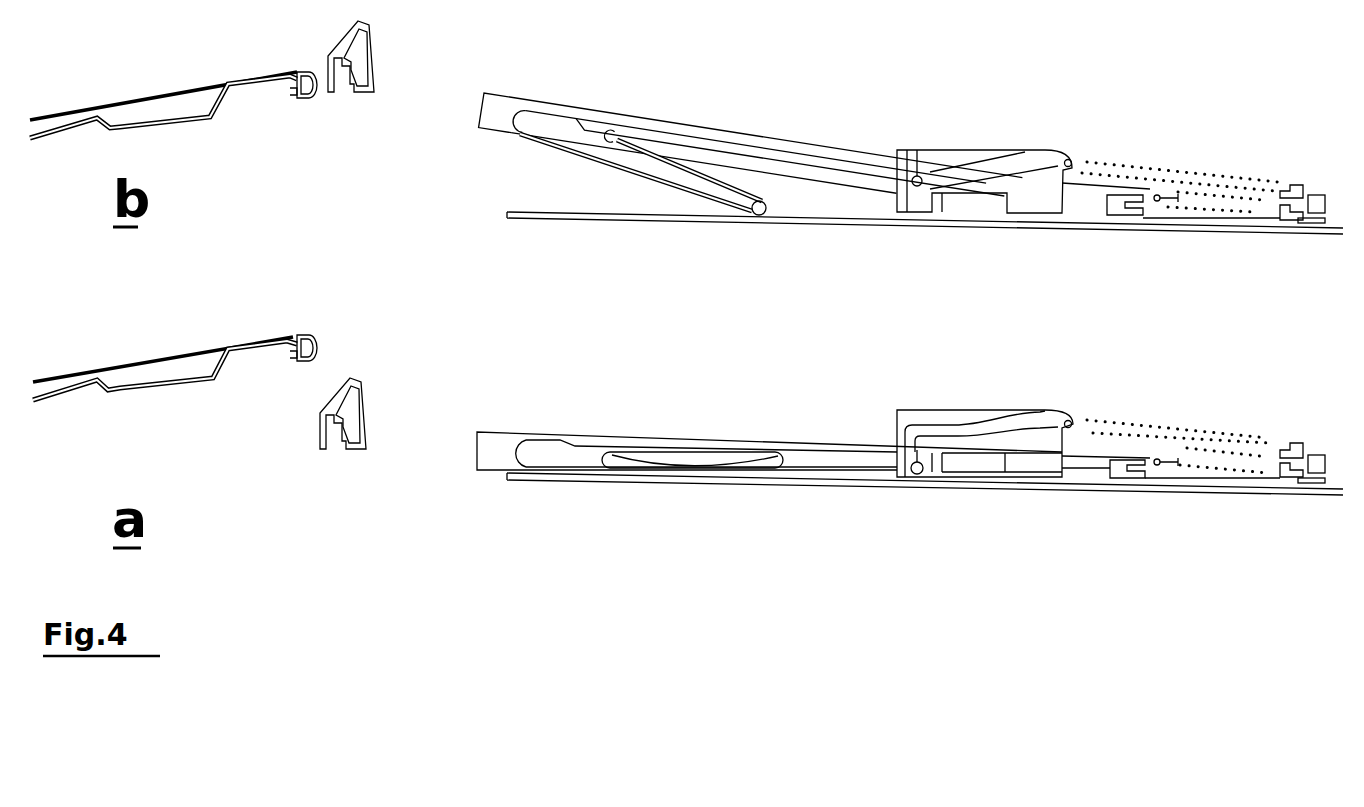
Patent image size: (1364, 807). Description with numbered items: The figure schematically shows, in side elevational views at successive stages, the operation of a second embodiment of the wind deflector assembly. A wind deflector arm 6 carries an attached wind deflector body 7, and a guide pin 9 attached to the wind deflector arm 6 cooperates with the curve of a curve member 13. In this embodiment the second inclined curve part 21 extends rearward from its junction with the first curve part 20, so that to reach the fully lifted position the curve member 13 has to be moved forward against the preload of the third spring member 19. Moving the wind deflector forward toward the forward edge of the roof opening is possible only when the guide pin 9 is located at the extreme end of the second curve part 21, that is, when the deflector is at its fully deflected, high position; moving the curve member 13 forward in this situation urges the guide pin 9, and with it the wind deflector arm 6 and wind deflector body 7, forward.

The wind deflector arm 6 is at (520, 94).
The wind deflector body 7 is at (380, 50).
The guide pin 9 is at (916, 176).
The curve member 13 is at (905, 150).
The third spring member 19 is at (1195, 172).
The first curve part 20 is at (918, 200).
The second inclined curve part 21 is at (993, 168).